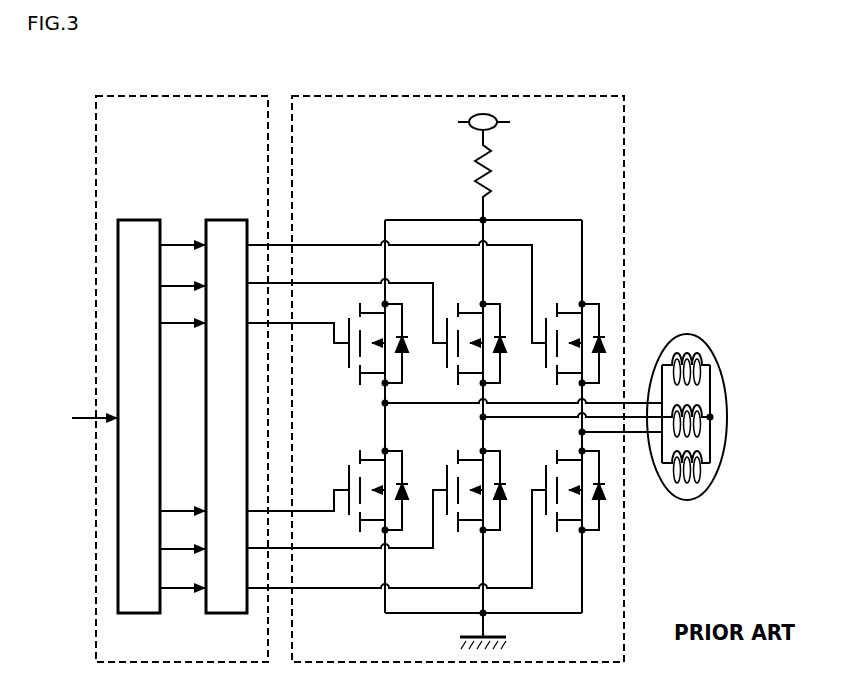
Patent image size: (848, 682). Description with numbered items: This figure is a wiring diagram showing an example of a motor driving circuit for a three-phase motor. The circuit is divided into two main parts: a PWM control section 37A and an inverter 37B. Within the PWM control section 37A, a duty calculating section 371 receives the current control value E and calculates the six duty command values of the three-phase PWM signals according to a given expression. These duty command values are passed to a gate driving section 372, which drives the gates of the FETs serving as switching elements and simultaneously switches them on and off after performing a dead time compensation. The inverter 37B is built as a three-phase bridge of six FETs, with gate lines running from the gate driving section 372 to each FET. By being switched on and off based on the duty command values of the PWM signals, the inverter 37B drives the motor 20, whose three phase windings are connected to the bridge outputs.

The motor 20 is at (700, 335).
The PWM control section 37A is at (250, 93).
The inverter 37B is at (598, 93).
The duty calculating section 371 is at (147, 218).
The gate driving section 372 is at (235, 218).